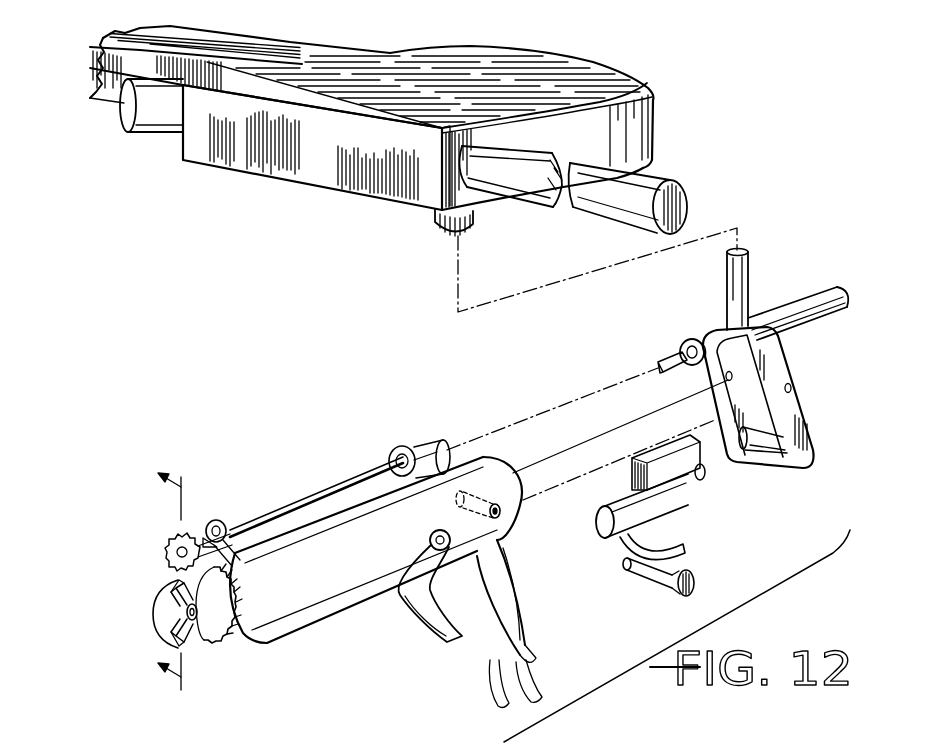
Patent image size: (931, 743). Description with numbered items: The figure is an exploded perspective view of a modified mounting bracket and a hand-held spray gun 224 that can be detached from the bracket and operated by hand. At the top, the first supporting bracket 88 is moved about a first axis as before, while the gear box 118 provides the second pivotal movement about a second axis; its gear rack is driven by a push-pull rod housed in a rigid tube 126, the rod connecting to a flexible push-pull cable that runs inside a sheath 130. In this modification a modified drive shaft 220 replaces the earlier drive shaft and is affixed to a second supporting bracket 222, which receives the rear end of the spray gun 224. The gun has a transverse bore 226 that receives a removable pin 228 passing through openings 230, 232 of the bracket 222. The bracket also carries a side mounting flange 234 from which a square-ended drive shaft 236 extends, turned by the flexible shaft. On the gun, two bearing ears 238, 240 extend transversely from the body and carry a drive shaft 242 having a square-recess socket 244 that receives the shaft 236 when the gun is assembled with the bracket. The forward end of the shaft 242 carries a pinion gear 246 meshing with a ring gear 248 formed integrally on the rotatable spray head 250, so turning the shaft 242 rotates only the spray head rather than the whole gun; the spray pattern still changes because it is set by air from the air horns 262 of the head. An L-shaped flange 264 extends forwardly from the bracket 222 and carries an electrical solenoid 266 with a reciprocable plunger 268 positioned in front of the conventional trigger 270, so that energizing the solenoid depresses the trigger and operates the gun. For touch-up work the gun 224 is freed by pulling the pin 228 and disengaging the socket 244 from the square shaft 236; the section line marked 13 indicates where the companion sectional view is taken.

The first supporting bracket 88 is at (298, 46).
The sheath 130 is at (148, 113).
The gear box 118 is at (315, 152).
The modified drive shaft 220 is at (440, 218).
The rigid tube 126 is at (612, 200).
The second supporting bracket 222 is at (814, 431).
The spray gun 224 is at (353, 606).
The transverse bore 226 is at (498, 519).
The removable pin 228 is at (641, 573).
The opening 230 is at (791, 386).
The opening 232 is at (725, 379).
The side mounting flange 234 is at (686, 338).
The square-ended drive shaft 236 is at (660, 364).
The bearing ear 238 is at (398, 448).
The bearing ear 240 is at (217, 520).
The drive shaft 242 is at (325, 492).
The square-recess socket 244 is at (440, 441).
The pinion gear 246 is at (174, 541).
The ring gear 248 is at (228, 638).
The spray head 250 is at (199, 649).
The air horns 262 is at (160, 600).
The L-shaped flange 264 is at (733, 455).
The electrical solenoid 266 is at (662, 525).
The reciprocable plunger 268 is at (706, 472).
The trigger 270 is at (427, 622).
The section line 13- 13 is at (153, 570).